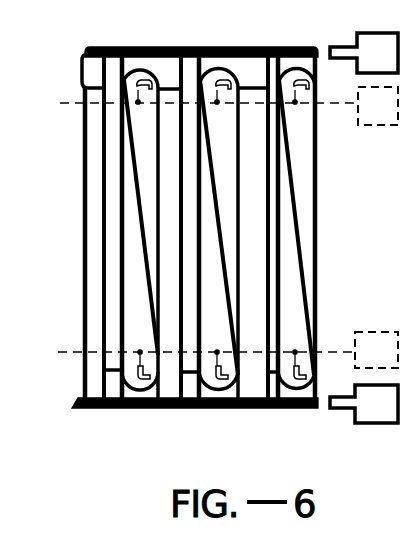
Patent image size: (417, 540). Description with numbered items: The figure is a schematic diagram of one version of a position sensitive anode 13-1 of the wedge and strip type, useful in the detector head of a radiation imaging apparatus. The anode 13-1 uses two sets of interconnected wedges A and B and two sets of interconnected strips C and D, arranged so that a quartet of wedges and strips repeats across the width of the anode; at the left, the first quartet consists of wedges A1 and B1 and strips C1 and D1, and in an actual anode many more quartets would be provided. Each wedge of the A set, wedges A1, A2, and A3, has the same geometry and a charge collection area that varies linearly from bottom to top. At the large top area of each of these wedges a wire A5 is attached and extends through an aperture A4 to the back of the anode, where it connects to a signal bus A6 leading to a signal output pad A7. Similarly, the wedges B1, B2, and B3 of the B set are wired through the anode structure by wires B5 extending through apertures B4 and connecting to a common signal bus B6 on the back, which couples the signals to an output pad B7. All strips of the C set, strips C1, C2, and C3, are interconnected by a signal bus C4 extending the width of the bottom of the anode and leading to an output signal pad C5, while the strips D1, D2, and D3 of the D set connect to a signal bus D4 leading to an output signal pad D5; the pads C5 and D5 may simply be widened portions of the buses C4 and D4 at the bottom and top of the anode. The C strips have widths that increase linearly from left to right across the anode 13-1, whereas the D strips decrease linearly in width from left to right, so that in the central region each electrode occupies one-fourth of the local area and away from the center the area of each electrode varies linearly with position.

The position sensitive anode 13-1 is at (73, 241).
The set of interconnected wedges A is at (330, 165).
The wedge A1 is at (135, 143).
The wedge A2 is at (227, 209).
The wedge A3 is at (308, 204).
The aperture A4 is at (136, 82).
The wire A5 is at (325, 73).
The signal bus A6 is at (317, 102).
The signal output pad A7 is at (373, 122).
The set of interconnected wedges B is at (310, 296).
The wedge B1 is at (128, 297).
The wedge B2 is at (280, 274).
The wedge B3 is at (290, 253).
The aperture B4 is at (127, 377).
The wire B5 is at (148, 378).
The signal bus B6 is at (350, 352).
The output pad B7 is at (377, 336).
The set of interconnected strips C is at (208, 422).
The strip C1 is at (96, 367).
The strip C2 is at (65, 315).
The strip C3 is at (253, 391).
The signal bus C4 is at (298, 397).
The output signal pad C5 is at (380, 413).
The set of interconnected strips D is at (196, 38).
The strip D1 is at (109, 62).
The strip D2 is at (190, 61).
The strip D3 is at (272, 60).
The signal bus D4 is at (153, 50).
The output signal pad D5 is at (372, 42).